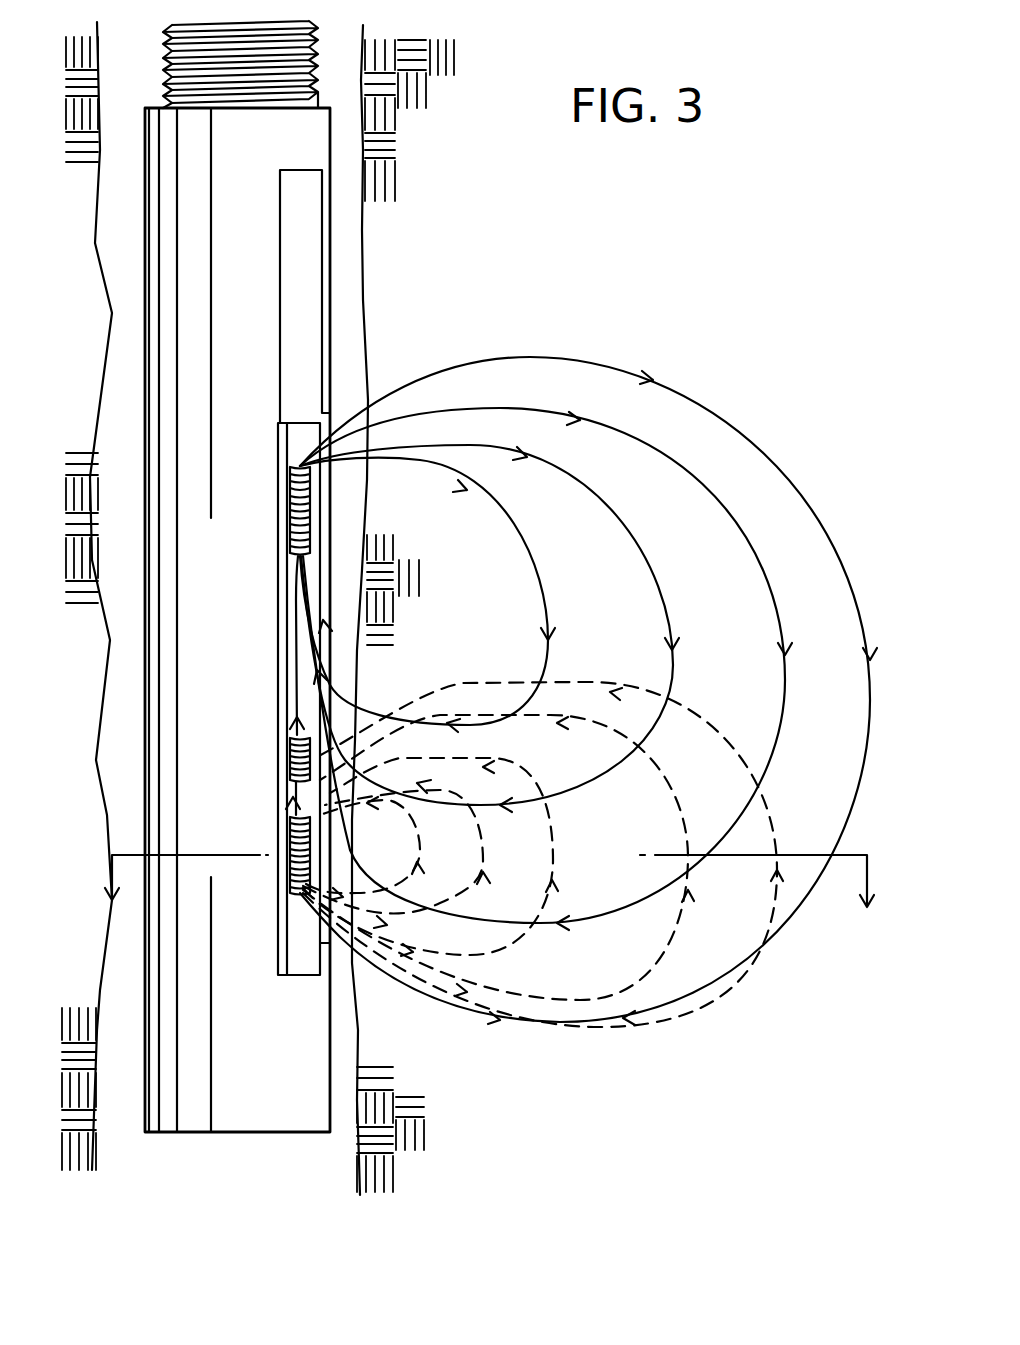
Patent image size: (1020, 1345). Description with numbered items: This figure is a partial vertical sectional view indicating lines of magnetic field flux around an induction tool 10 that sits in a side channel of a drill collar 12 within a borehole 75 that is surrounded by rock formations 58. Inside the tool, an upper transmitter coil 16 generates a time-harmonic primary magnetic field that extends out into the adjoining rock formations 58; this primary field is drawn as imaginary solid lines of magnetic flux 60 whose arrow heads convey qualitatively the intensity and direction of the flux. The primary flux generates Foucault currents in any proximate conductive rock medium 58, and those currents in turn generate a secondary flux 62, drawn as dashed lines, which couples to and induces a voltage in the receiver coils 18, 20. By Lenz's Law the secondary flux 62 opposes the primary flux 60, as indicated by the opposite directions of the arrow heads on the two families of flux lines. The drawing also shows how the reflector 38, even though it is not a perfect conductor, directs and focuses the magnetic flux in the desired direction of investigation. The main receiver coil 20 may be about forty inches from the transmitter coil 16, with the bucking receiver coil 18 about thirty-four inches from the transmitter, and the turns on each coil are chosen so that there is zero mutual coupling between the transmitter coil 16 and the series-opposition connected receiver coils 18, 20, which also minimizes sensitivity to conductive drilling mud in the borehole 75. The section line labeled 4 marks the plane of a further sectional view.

The induction tool 10 is at (321, 576).
The drill collar 12 is at (247, 566).
The upper transmitter coil 16 is at (312, 500).
The bucking receiver coil 18 is at (295, 758).
The main receiver coil 20 is at (296, 835).
The reflector 38 is at (283, 645).
The rock formations 58 is at (470, 626).
The lines of magnetic flux 60 is at (718, 413).
The secondary flux 62 is at (708, 1000).
The borehole 75 is at (343, 1040).
The section line 4- 4 is at (489, 904).